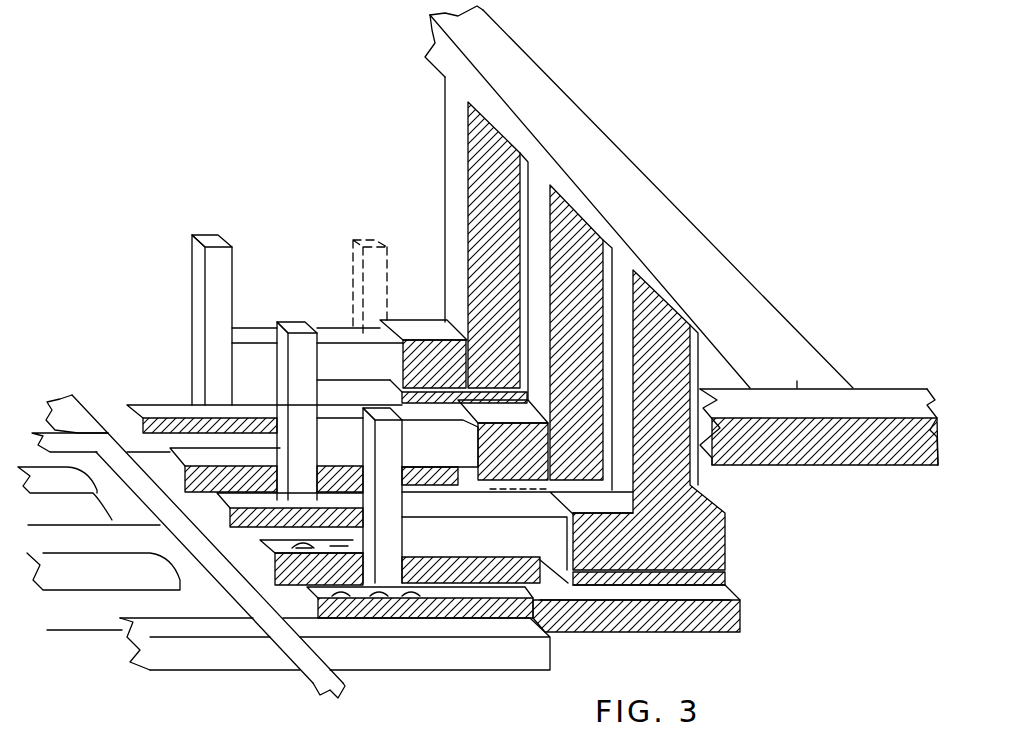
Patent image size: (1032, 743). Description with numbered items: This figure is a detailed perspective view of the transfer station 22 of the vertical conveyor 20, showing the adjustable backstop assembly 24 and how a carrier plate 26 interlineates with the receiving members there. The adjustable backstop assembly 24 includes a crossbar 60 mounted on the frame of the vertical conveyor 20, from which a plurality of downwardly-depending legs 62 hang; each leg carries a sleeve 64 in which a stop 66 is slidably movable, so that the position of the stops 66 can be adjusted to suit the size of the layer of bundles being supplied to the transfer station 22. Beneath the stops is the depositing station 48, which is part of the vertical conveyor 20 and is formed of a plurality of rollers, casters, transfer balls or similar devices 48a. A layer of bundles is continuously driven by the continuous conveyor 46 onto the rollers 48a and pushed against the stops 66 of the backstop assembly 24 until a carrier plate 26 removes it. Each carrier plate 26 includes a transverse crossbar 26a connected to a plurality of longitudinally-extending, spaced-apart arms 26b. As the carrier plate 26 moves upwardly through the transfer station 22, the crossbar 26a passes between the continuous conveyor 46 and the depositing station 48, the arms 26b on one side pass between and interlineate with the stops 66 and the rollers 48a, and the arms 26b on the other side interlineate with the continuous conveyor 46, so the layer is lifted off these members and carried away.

The vertical conveyor 20 is at (859, 408).
The transfer station 22 is at (352, 232).
The adjustable backstop assembly 24 is at (586, 97).
The carrier plate 26 is at (81, 392).
The transverse crossbar 26a is at (83, 418).
The longitudinally-extending arms 26b is at (165, 662).
The continuous conveyor 46 is at (75, 632).
The depositing station 48 is at (291, 589).
The rollers 48a is at (420, 600).
The crossbar 60 is at (660, 220).
The downwardly-depending legs 62 is at (458, 188).
The sleeves 64 is at (417, 328).
The stops 66 is at (187, 250).